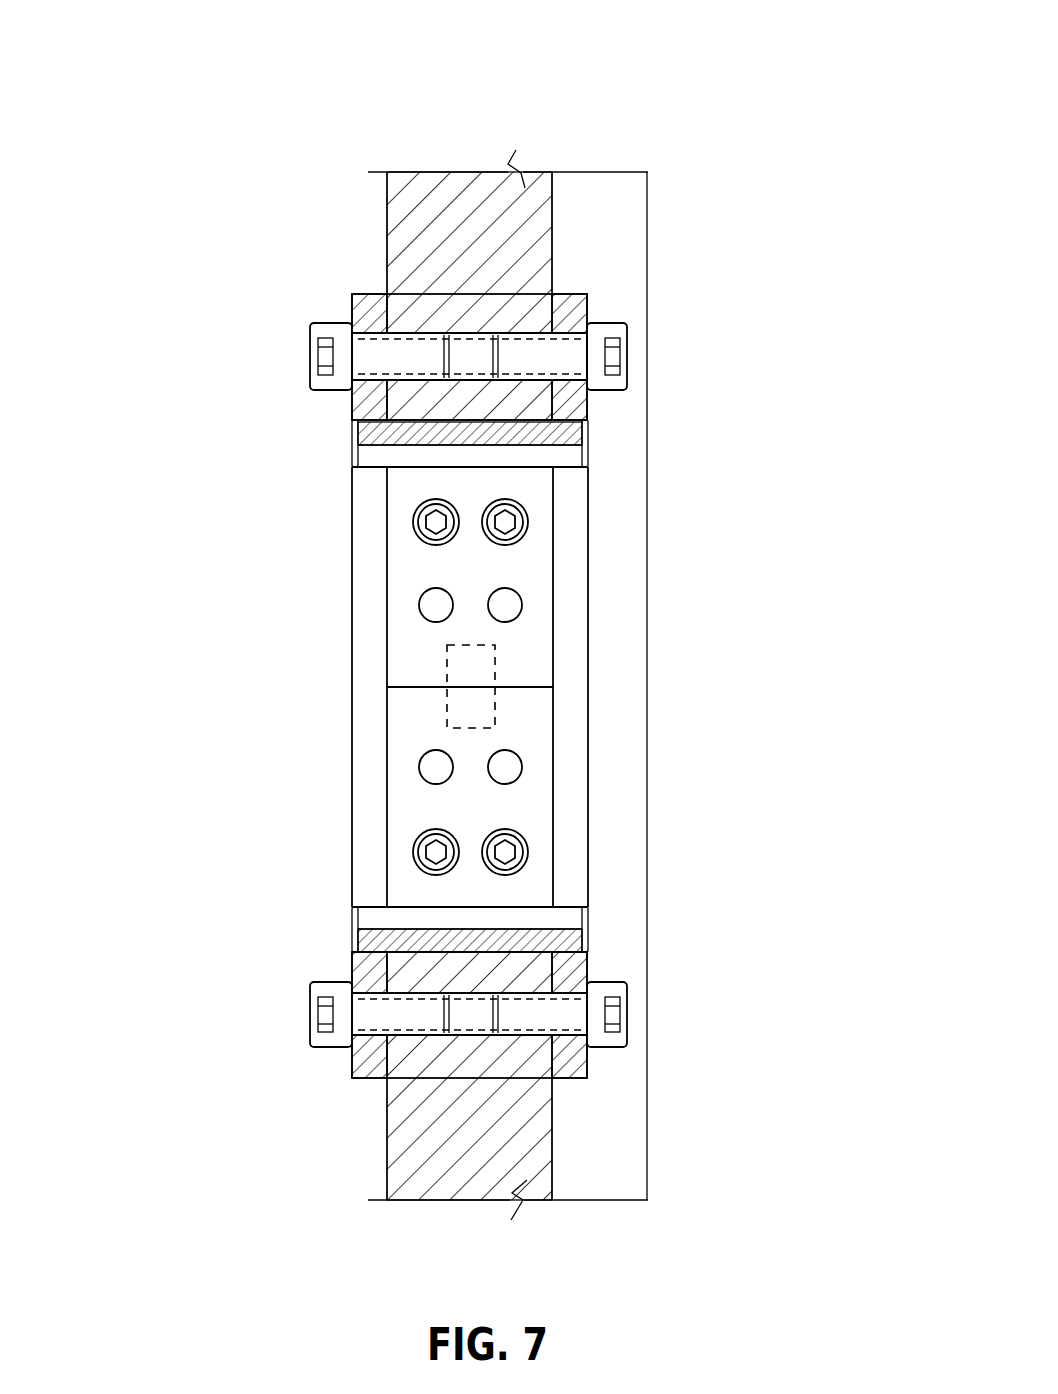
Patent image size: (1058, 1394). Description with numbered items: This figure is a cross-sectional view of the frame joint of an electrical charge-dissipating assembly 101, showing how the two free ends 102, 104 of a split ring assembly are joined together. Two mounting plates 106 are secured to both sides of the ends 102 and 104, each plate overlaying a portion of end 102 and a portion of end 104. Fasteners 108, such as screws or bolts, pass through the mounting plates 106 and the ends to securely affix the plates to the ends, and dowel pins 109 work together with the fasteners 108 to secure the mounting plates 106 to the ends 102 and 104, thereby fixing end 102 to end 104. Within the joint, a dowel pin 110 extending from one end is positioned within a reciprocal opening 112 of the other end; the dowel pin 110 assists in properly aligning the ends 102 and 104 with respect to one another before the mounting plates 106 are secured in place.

The electrical charge-dissipating assembly 101 is at (470, 615).
The end 102 is at (536, 257).
The end 104 is at (545, 1168).
The mounting plate 106 is at (494, 687).
The fastener 108 is at (627, 355).
The dowel pin 109 is at (606, 440).
The dowel pin 110 is at (447, 645).
The reciprocal opening 112 is at (430, 716).